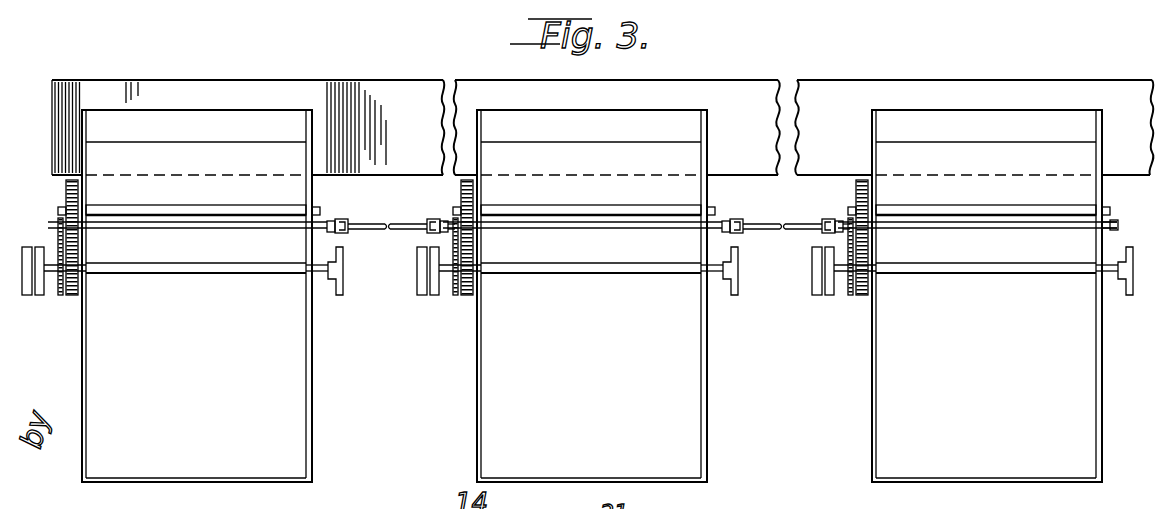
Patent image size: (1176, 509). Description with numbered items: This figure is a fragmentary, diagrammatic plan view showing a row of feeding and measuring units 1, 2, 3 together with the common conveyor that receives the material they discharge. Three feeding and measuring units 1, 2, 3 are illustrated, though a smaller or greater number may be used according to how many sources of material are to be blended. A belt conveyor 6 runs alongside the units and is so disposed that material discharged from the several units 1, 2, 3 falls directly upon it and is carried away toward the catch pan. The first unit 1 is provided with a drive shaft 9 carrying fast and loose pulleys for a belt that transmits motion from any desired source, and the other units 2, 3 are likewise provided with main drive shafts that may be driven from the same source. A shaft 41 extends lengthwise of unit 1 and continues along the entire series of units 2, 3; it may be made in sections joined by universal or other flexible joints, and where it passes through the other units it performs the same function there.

The feeding and measuring unit 1 is at (285, 385).
The feeding and measuring unit 2 is at (492, 353).
The feeding and measuring unit 3 is at (888, 332).
The belt conveyor 6 is at (397, 90).
The drive shaft 9 is at (193, 269).
The shaft 41 is at (367, 221).